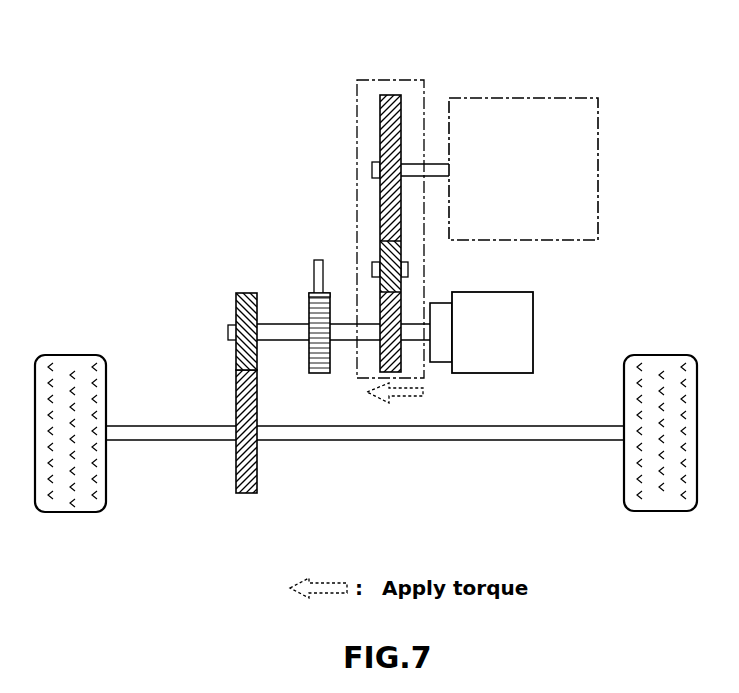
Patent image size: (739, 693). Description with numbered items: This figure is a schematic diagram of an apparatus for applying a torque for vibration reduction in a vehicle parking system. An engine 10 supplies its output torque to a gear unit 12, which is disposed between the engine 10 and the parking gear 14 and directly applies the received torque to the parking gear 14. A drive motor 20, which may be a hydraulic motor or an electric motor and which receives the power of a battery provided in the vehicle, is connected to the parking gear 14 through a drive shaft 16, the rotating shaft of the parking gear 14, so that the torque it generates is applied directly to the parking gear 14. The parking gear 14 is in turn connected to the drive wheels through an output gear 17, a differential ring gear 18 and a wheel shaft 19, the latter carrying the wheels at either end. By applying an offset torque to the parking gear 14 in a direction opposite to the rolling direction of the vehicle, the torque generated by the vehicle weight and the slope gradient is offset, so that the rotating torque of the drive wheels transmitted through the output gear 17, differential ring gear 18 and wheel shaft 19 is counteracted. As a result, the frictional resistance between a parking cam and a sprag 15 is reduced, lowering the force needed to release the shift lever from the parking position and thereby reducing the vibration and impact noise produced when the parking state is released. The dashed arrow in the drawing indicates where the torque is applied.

The engine 10 is at (557, 98).
The gear unit 12 is at (357, 98).
The parking gear 14 is at (307, 307).
The sprag 15 is at (320, 260).
The drive shaft 16 is at (354, 342).
The output gear 17 is at (248, 293).
The differential ring gear 18 is at (244, 495).
The wheel shaft 19 is at (565, 425).
The drive motor 20 is at (533, 313).